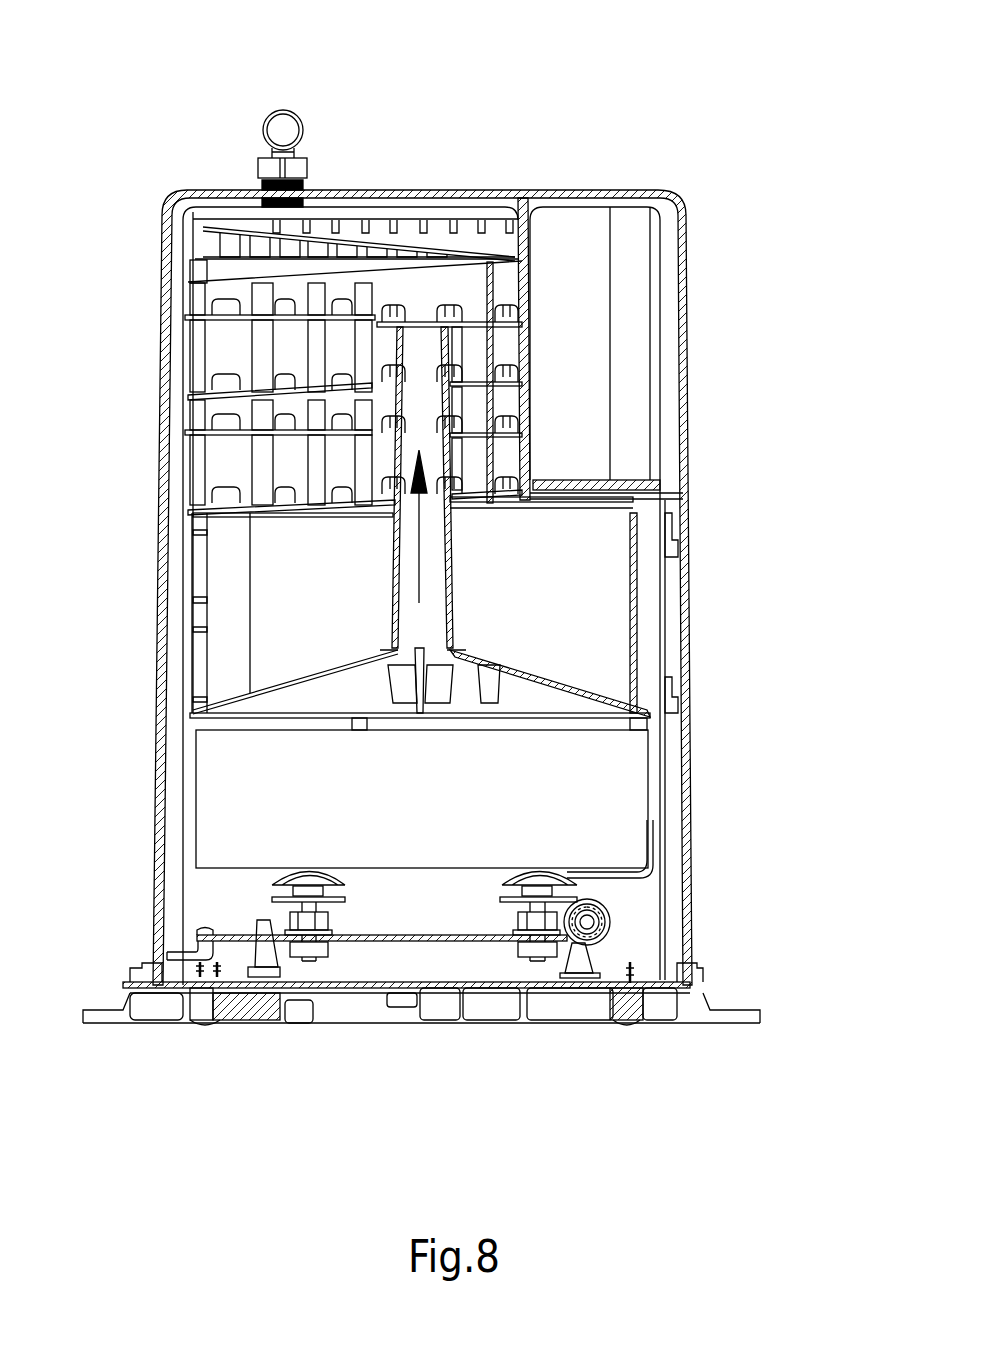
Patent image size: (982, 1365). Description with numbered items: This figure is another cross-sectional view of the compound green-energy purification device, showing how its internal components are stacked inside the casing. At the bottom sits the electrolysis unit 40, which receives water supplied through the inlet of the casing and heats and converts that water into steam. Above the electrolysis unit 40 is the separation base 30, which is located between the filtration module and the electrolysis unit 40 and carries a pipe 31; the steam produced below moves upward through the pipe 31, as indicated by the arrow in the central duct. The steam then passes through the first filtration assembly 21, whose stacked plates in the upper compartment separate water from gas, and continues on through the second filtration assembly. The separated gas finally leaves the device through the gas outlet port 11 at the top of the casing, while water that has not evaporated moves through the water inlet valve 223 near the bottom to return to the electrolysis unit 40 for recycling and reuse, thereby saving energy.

The gas outlet port 11 is at (287, 122).
The first filtration assembly 21 is at (203, 355).
The pipe 31 is at (393, 578).
The separation base 30 is at (570, 690).
The water inlet valve 223 is at (607, 922).
The electrolysis unit 40 is at (250, 903).